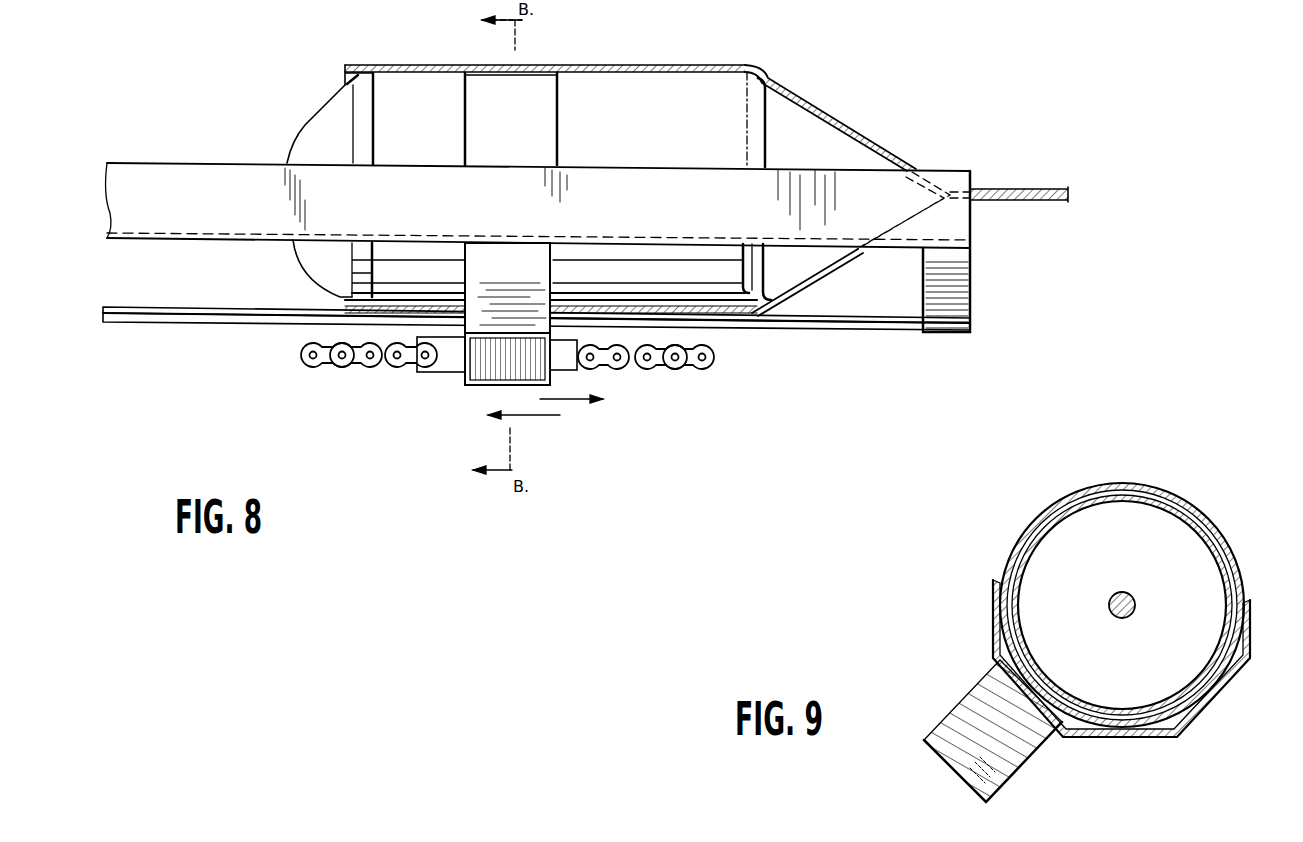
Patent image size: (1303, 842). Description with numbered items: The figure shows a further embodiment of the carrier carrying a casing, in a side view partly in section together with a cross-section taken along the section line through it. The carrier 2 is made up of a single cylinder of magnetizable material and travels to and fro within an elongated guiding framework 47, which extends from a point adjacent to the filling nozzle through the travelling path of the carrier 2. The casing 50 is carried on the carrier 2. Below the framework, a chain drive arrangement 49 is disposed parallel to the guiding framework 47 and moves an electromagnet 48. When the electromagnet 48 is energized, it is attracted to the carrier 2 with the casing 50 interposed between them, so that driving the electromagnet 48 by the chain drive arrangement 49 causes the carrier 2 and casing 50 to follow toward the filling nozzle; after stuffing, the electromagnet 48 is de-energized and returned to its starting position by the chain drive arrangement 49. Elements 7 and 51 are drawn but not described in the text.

In FIG. 8, the carrier 2 is at (722, 142).
In FIG. 9, the carrier 2 is at (1018, 545).
In FIG. 8, the conical end wall 7 is at (318, 128).
In FIG. 8, the guiding framework 47 is at (207, 170).
In FIG. 9, the guiding framework 47 is at (1217, 693).
In FIG. 8, the electromagnet 48 is at (528, 270).
In FIG. 9, the electromagnet 48 is at (972, 717).
In FIG. 8, the chain drive arrangement 49 is at (650, 368).
In FIG. 8, the casing 50 is at (868, 138).
In FIG. 9, the casing 50 is at (1232, 556).
In FIG. 8, the top cover plate 51 is at (357, 67).